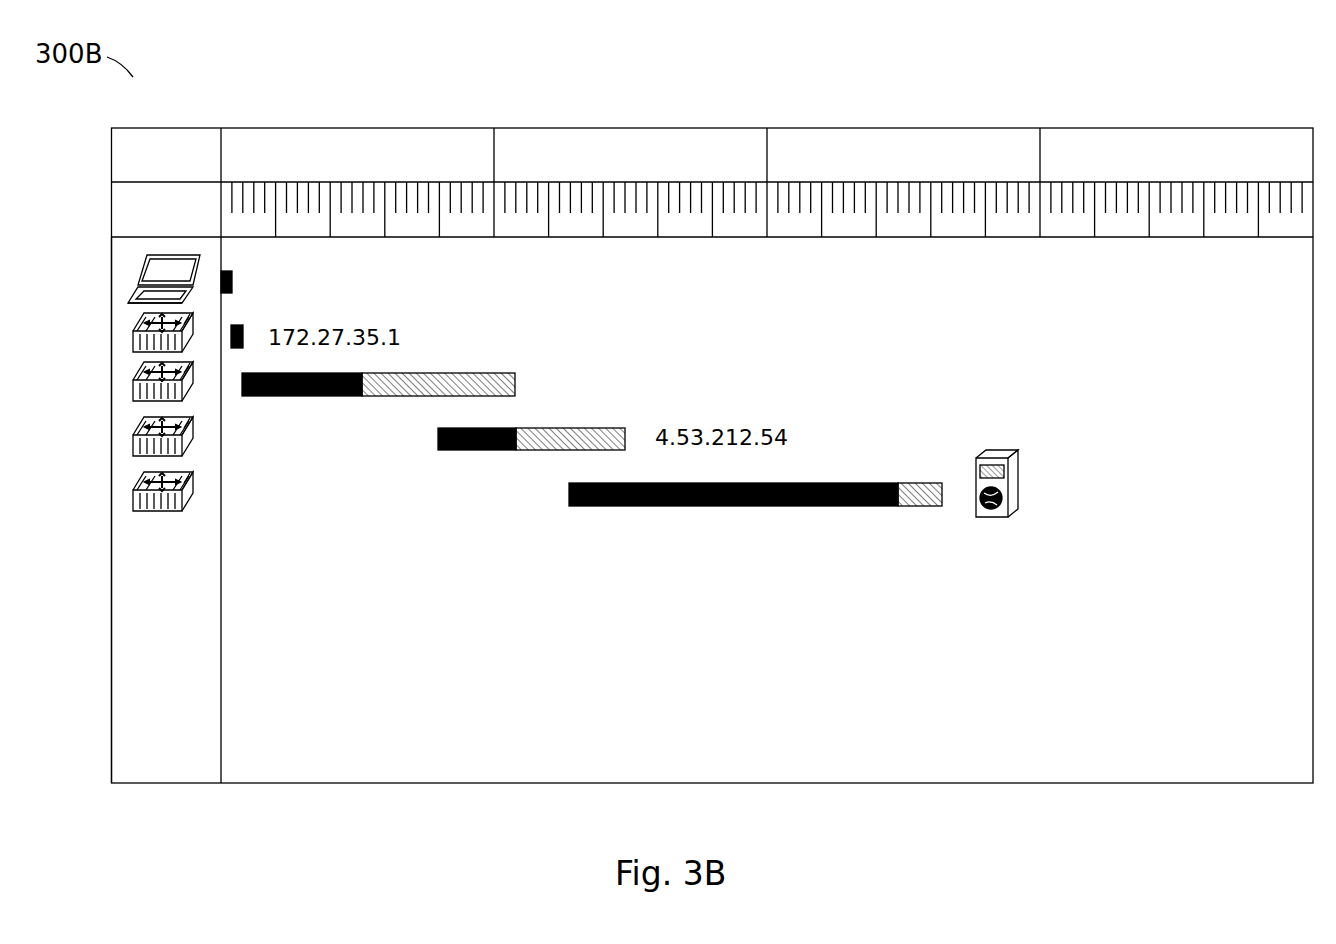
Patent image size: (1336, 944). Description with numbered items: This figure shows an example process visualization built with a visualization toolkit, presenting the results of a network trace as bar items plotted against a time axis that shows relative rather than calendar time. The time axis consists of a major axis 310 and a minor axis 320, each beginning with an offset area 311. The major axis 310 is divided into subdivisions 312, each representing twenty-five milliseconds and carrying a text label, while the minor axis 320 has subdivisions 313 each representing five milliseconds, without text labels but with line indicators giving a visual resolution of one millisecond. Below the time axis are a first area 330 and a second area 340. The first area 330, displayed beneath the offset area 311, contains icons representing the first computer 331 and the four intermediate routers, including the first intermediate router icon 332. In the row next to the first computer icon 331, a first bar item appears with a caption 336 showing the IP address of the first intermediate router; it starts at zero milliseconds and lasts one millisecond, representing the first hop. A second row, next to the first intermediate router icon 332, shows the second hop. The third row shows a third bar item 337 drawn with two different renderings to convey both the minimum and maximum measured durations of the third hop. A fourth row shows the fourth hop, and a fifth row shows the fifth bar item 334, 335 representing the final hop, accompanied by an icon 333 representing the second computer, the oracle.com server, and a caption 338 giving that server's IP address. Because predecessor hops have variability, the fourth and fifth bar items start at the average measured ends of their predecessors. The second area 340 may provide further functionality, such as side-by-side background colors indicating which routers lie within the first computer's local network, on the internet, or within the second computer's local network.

The major axis 310 is at (122, 155).
The offset area 311 is at (170, 130).
The subdivisions of the major axis 312 is at (322, 129).
The subdivisions of the minor axis 313 is at (240, 190).
The minor axis 320 is at (122, 222).
The first area 330 is at (123, 675).
The first computer icon 331 is at (140, 285).
The first intermediate router icon 332 is at (138, 337).
The second computer icon 333 is at (993, 453).
The fifth bar item 334 is at (612, 507).
The fifth bar item 335 is at (920, 508).
The caption 336 is at (403, 287).
The third bar item 337 is at (490, 365).
The caption 338 is at (1127, 475).
The second area 340 is at (915, 767).